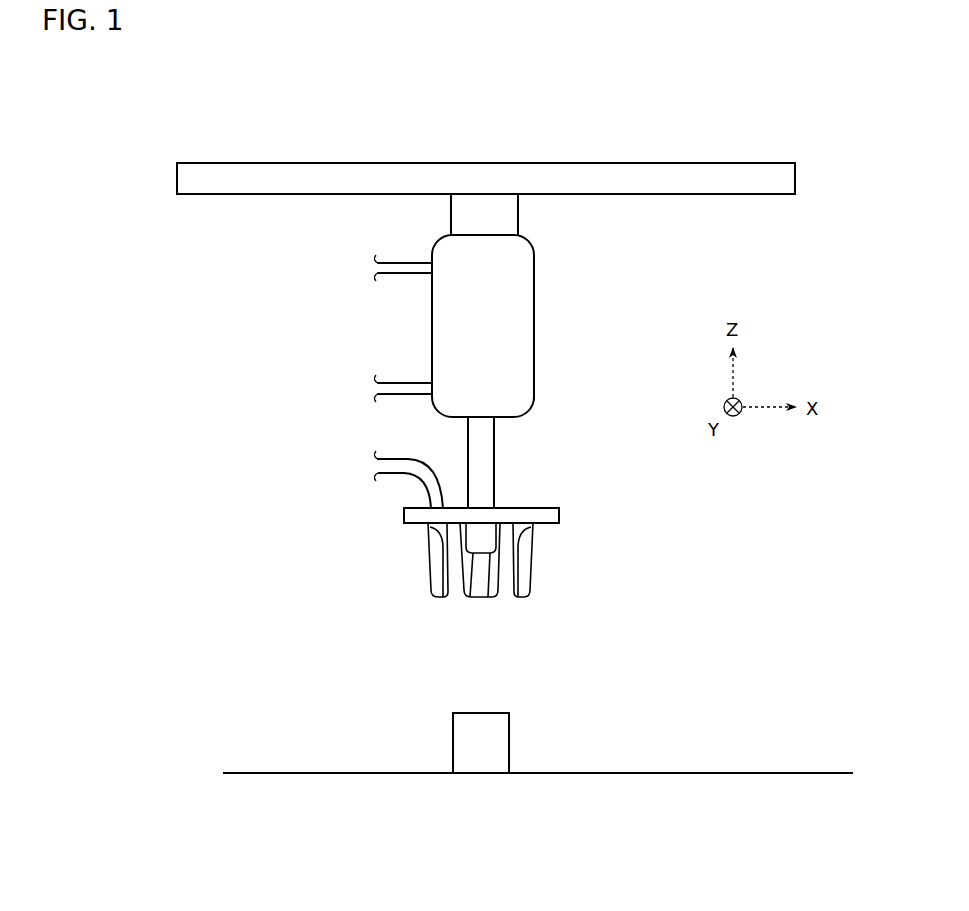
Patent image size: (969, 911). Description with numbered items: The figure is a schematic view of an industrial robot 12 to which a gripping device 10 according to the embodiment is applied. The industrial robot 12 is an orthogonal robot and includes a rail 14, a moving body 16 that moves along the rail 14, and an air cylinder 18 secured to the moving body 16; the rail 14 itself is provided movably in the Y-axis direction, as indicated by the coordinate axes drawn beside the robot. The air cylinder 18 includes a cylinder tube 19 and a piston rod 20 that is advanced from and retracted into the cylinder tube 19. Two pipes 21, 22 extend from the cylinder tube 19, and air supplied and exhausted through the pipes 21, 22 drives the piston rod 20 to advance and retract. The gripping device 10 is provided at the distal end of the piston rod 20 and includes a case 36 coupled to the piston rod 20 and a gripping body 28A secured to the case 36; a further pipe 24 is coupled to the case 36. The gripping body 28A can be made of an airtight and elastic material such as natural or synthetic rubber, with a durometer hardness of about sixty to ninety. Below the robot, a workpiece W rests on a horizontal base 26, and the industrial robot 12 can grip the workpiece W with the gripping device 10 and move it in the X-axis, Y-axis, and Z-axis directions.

The gripping device 10 is at (582, 531).
The industrial robot 12 is at (784, 138).
The rail 14 is at (631, 163).
The moving body 16 is at (507, 216).
The air cylinder 18 is at (540, 334).
The cylinder tube 19 is at (508, 372).
The piston rod 20 is at (483, 467).
The pipe 21 is at (401, 275).
The pipe 22 is at (410, 383).
The pipe 24 is at (396, 473).
The horizontal base 26 is at (740, 772).
The gripping body 28A is at (415, 565).
The case 36 is at (408, 500).
The workpiece W is at (488, 745).